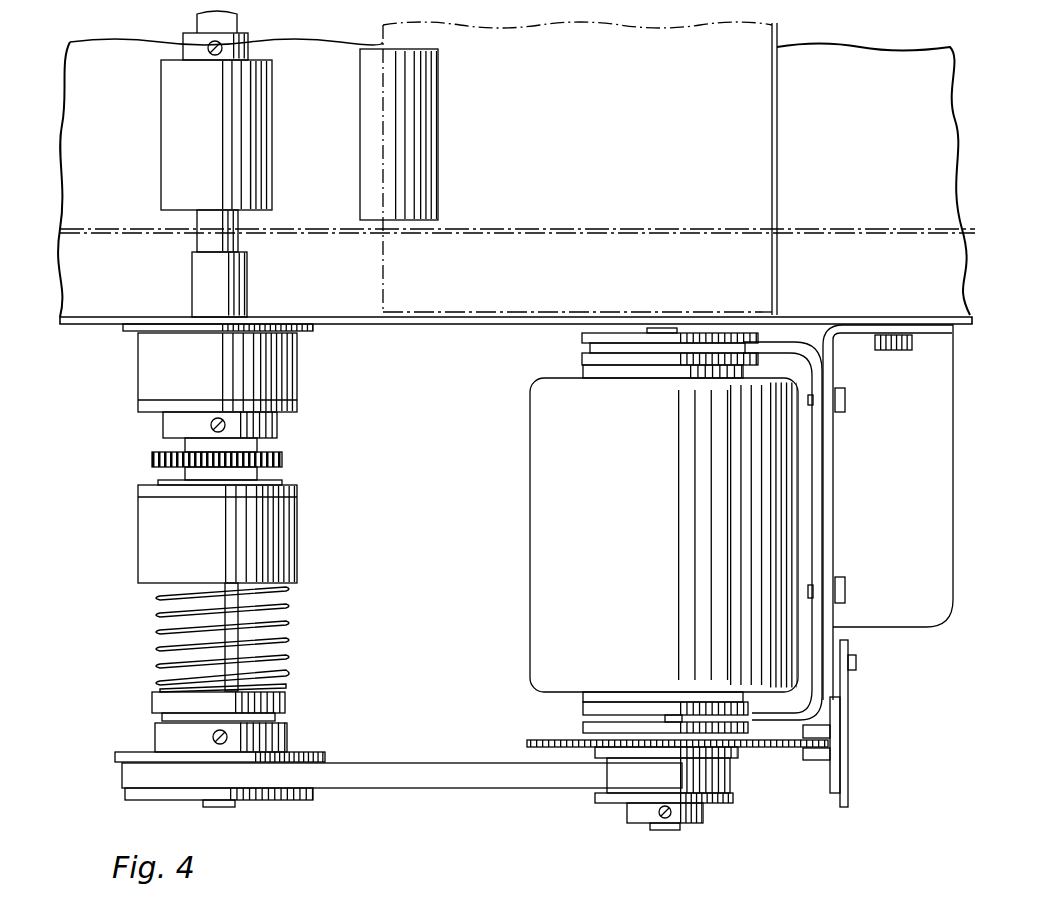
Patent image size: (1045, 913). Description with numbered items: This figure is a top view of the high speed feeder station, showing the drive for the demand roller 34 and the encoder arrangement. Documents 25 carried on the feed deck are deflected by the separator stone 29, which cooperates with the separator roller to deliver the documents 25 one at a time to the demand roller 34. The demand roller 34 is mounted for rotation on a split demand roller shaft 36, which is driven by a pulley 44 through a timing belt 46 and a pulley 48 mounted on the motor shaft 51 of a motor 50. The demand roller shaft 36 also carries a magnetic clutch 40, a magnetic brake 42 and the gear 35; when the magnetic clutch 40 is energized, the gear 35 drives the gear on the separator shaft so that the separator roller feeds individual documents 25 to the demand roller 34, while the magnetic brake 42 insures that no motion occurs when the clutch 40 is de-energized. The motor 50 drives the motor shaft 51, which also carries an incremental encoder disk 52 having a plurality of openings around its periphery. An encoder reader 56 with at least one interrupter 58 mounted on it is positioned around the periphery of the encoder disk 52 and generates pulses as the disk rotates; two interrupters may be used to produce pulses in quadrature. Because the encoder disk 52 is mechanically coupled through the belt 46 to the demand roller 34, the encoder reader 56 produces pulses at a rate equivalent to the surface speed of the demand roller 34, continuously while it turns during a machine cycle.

The documents 25 is at (777, 35).
The separator stone 29 is at (438, 97).
The demand roller 34 is at (272, 95).
The demand roller shaft 36 is at (237, 17).
The magnetic brake 42 is at (297, 360).
The gear 35 is at (282, 457).
The magnetic clutch 40 is at (297, 520).
The pulley 44 is at (312, 752).
The timing belt 46 is at (463, 790).
The motor 50 is at (532, 505).
The incremental encoder disk 52 is at (535, 740).
The pulley 48 is at (595, 803).
The motor shaft 51 is at (667, 827).
The encoder reader 56 is at (848, 805).
The interrupter 58 is at (817, 760).